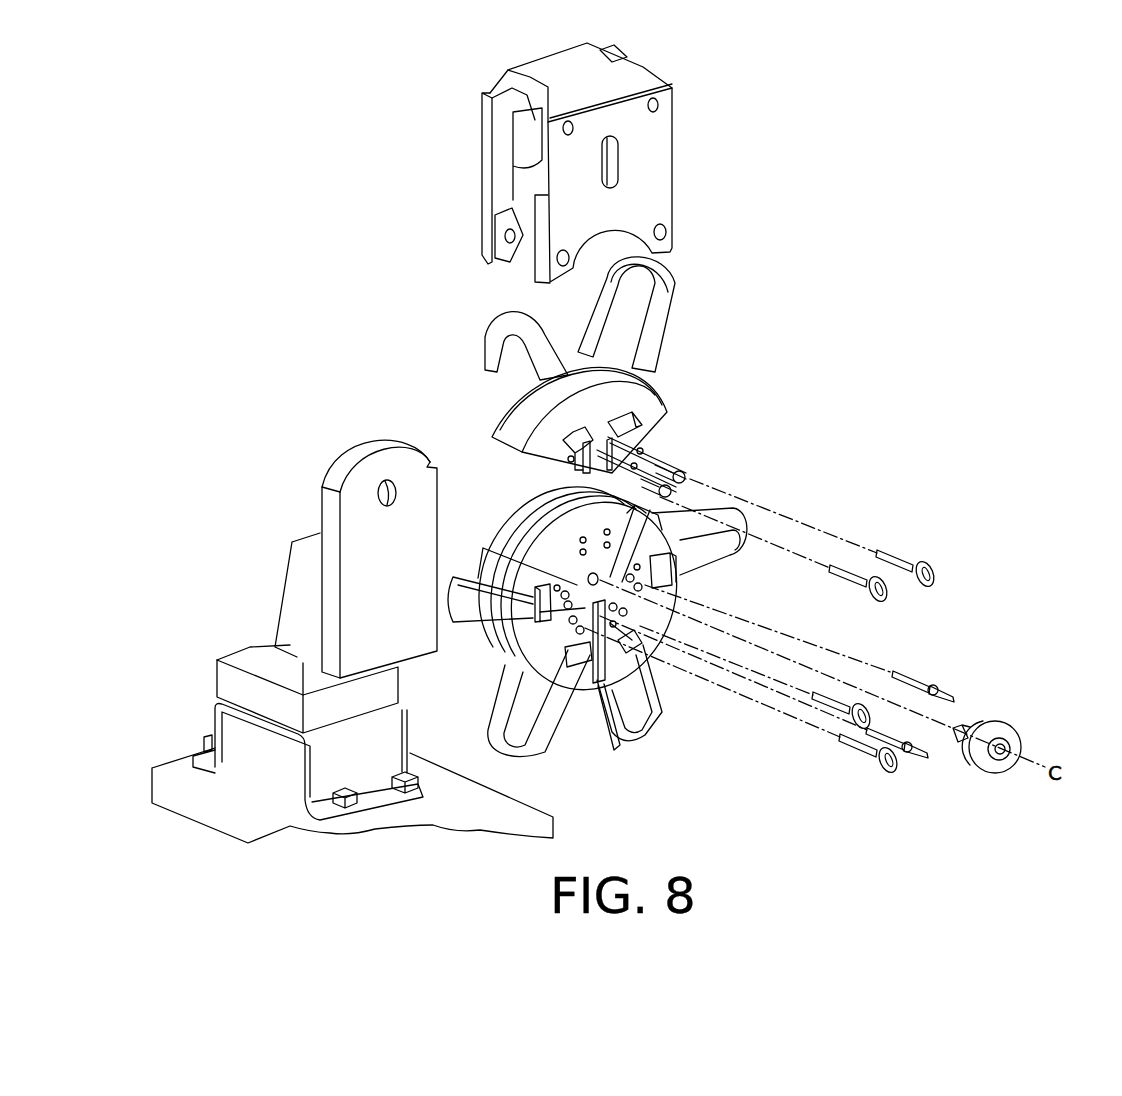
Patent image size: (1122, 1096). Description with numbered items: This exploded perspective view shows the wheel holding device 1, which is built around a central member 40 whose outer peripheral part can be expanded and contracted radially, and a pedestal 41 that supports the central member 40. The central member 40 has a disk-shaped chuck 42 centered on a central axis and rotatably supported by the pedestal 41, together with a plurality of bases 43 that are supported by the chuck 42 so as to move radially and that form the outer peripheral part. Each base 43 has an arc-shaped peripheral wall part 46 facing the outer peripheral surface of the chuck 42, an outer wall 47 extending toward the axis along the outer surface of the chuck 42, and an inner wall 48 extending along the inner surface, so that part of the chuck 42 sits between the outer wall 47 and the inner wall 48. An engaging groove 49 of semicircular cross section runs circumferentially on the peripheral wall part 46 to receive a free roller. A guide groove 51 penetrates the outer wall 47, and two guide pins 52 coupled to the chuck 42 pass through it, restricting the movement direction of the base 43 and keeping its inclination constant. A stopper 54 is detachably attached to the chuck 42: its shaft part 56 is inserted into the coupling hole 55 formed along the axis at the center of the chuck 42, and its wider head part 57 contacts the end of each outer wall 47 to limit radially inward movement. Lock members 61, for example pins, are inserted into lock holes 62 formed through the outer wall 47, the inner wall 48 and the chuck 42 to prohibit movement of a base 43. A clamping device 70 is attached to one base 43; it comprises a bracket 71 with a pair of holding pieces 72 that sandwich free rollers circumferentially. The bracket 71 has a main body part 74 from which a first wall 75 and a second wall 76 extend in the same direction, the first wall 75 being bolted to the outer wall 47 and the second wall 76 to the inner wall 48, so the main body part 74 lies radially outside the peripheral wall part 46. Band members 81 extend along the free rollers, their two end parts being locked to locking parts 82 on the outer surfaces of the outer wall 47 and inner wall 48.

The wheel holding device 1 is at (323, 150).
The central member 40 is at (743, 566).
The pedestal 41 is at (318, 515).
The chuck 42 is at (523, 505).
The base 43 is at (672, 402).
The peripheral wall part 46 is at (690, 505).
The outer wall 47 is at (765, 628).
The inner wall 48 is at (635, 478).
The engaging groove 49 is at (520, 428).
The guide groove 51 is at (600, 450).
The guide pin 52 is at (697, 488).
The stopper 54 is at (1010, 727).
The coupling hole 55 is at (588, 575).
The shaft part 56 is at (955, 739).
The head part 57 is at (982, 722).
The lock member 61 is at (879, 552).
The lock hole 62 is at (627, 697).
The clamping device 70 is at (590, 158).
The bracket 71 is at (645, 57).
The holding piece 72 is at (525, 152).
The main body part 74 is at (545, 63).
The first wall 75 is at (672, 213).
The second wall 76 is at (500, 186).
The band member 81 is at (665, 300).
The locking part 82 is at (630, 420).